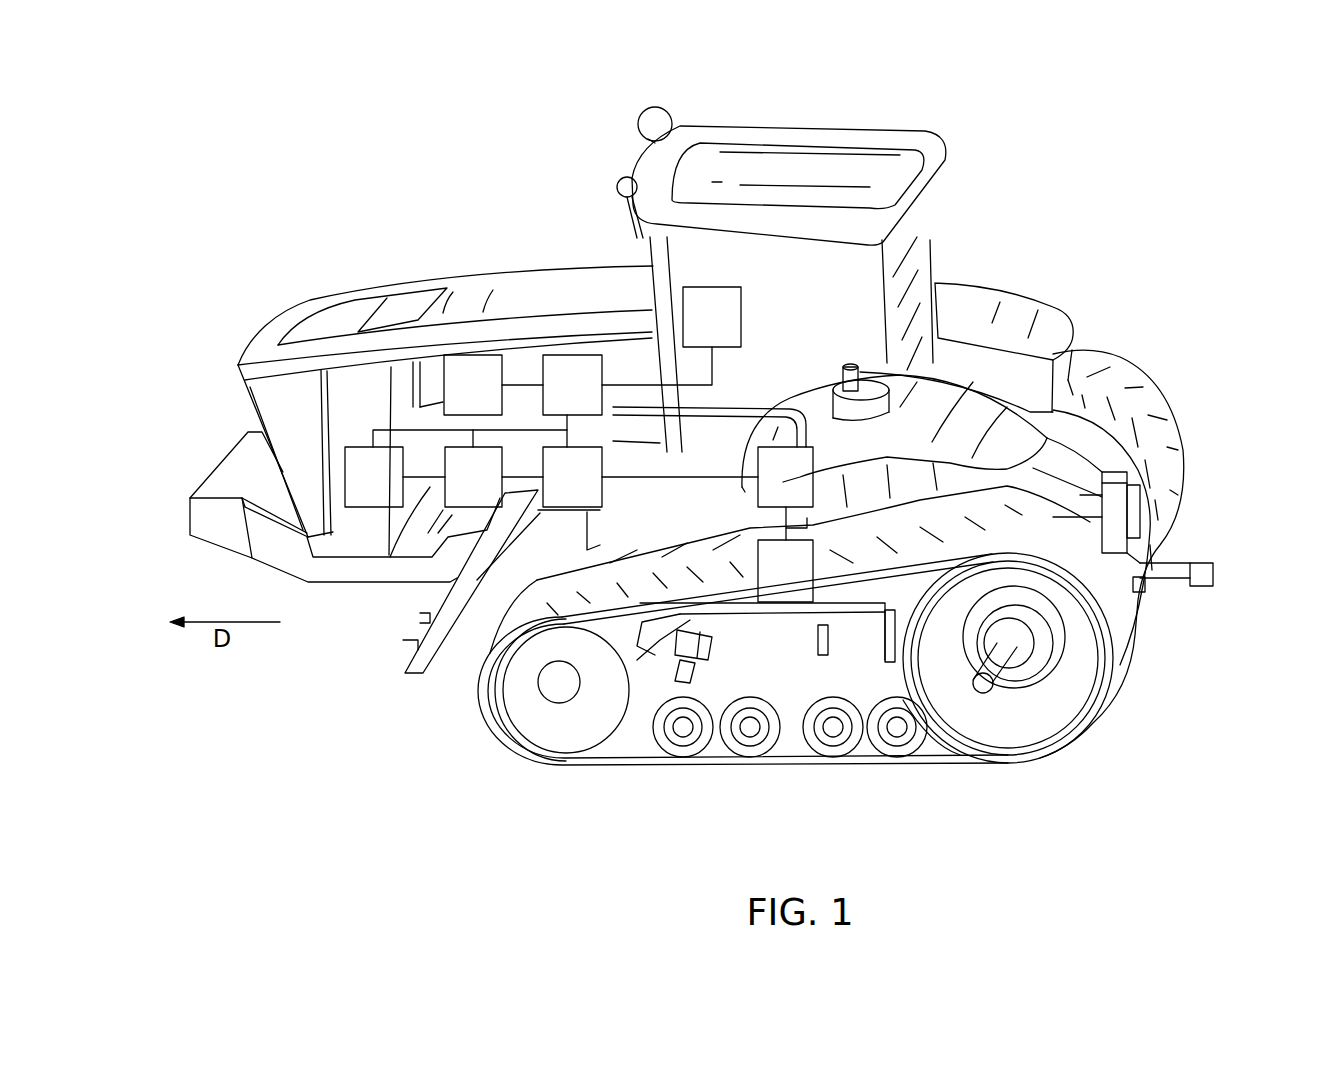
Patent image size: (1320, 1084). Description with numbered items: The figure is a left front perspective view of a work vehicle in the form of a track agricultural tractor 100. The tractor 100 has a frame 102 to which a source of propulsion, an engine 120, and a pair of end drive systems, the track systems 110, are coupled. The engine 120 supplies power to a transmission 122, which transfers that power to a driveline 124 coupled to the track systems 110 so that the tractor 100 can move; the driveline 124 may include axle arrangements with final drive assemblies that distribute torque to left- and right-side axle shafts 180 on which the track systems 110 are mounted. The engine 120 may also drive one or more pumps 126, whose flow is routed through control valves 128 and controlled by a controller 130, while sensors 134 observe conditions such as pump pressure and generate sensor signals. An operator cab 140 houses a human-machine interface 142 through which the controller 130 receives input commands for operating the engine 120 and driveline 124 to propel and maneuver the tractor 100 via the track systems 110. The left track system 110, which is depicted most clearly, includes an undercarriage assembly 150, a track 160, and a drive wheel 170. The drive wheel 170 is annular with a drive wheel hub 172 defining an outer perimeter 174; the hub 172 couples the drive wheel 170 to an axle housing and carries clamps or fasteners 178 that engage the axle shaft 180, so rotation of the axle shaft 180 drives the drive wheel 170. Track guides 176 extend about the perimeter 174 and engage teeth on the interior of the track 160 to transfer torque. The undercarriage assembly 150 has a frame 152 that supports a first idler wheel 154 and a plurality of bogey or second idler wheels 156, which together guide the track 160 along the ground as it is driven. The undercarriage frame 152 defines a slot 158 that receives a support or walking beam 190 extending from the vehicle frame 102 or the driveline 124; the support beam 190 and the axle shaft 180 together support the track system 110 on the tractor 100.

The tractor 100 is at (437, 180).
The frame 102 is at (302, 312).
The track systems 110 is at (1170, 390).
The engine 120 is at (554, 492).
The transmission 122 is at (767, 492).
The driveline 124 is at (767, 586).
The pumps 126 is at (455, 492).
The control valves 128 is at (356, 492).
The controller 130 is at (554, 400).
The sensors 134 is at (455, 400).
The cab 140 is at (937, 258).
The human-machine interface 142 is at (694, 332).
The undercarriage assembly 150 is at (828, 758).
The undercarriage frame 152 is at (860, 637).
The first idler wheels 154 is at (693, 752).
The second idler wheels 156 is at (547, 720).
The slot 158 is at (673, 638).
The track 160 is at (485, 718).
The drive wheel 170 is at (1010, 708).
The drive wheel hub 172 is at (1082, 630).
The outer perimeter 174 is at (1115, 677).
The track guides 176 is at (953, 737).
The fasteners 178 is at (1027, 657).
The axle shaft 180 is at (997, 675).
The support beam 190 is at (700, 675).